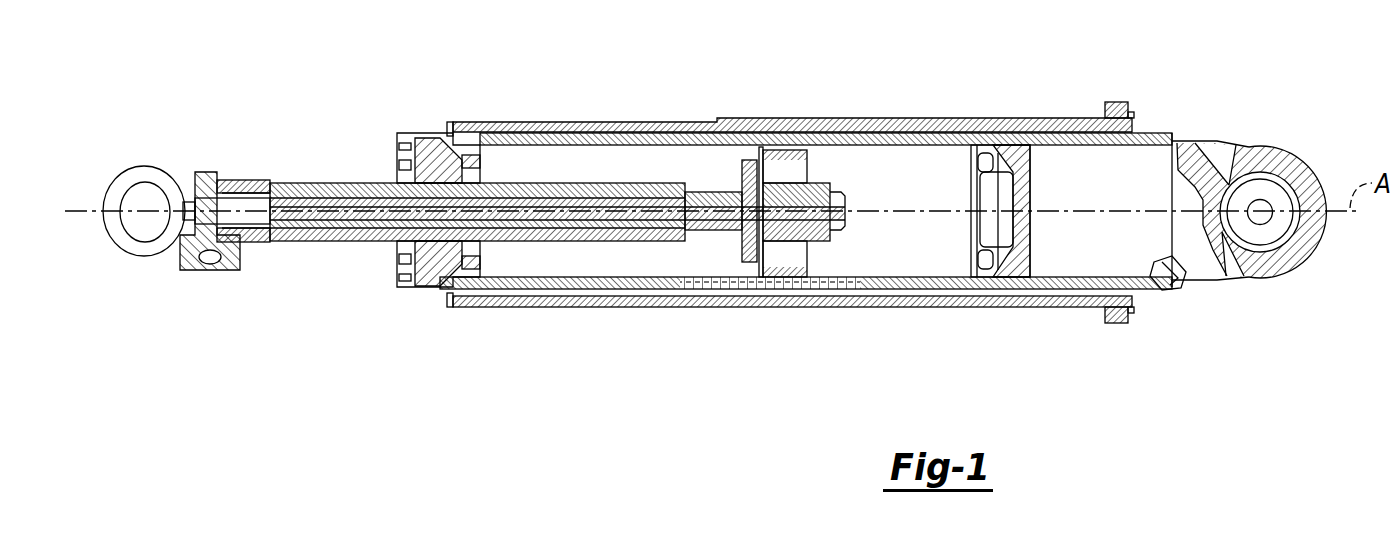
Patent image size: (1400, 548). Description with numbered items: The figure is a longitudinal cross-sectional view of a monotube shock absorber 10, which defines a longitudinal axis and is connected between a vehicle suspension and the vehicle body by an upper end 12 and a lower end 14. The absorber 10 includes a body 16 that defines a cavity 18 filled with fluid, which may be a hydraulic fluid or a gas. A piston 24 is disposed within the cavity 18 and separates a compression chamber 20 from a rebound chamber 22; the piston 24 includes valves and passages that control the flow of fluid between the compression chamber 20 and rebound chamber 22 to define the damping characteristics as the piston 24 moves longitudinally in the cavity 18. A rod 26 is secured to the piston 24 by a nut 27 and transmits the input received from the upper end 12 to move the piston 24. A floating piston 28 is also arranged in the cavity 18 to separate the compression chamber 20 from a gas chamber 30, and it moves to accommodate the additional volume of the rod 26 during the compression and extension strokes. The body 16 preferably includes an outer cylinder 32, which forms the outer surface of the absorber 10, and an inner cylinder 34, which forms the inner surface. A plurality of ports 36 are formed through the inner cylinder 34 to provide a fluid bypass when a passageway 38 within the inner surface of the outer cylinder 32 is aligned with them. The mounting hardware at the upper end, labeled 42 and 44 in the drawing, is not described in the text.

The monotube shock absorber 10 is at (712, 221).
The upper end 12 is at (137, 252).
The lower end 14 is at (1257, 268).
The body 16 is at (935, 114).
The cavity 18 is at (830, 208).
The compression chamber 20 is at (934, 263).
The rebound chamber 22 is at (580, 262).
The piston 24 is at (778, 262).
The rod 26 is at (530, 197).
The nut 27 is at (823, 233).
The floating piston 28 is at (1012, 160).
The gas chamber 30 is at (1158, 150).
The outer cylinder 32 is at (1000, 289).
The inner cylinder 34 is at (1070, 263).
The ports 36 is at (767, 290).
The passageway 38 is at (893, 297).
The mounting bracket 42 is at (225, 268).
The retaining nut 44 is at (178, 210).